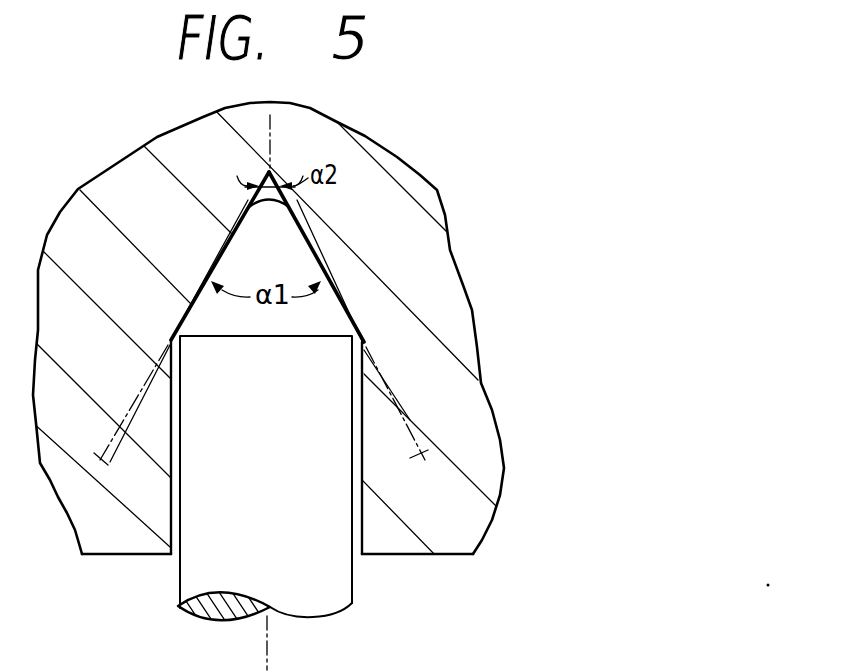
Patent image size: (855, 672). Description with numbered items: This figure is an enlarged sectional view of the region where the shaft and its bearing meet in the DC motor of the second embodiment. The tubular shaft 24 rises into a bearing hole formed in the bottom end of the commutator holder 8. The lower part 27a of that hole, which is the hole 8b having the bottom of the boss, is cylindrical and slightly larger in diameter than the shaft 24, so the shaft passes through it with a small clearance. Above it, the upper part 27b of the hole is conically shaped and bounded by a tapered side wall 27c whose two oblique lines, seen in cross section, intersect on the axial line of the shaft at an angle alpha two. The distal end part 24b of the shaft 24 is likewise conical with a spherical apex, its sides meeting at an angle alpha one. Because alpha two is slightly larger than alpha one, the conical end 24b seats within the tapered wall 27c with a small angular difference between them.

The commutator holder 8 is at (433, 304).
The hole having the bottom of the boss 8b is at (438, 576).
The shaft 24 is at (332, 595).
The distal end part 24b is at (288, 241).
The lower part of the hole 27a is at (298, 566).
The upper part of the hole 27b is at (276, 174).
The tapered side wall 27c is at (345, 308).